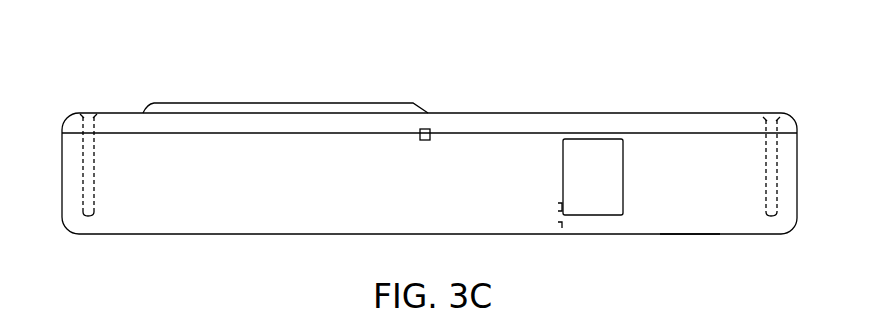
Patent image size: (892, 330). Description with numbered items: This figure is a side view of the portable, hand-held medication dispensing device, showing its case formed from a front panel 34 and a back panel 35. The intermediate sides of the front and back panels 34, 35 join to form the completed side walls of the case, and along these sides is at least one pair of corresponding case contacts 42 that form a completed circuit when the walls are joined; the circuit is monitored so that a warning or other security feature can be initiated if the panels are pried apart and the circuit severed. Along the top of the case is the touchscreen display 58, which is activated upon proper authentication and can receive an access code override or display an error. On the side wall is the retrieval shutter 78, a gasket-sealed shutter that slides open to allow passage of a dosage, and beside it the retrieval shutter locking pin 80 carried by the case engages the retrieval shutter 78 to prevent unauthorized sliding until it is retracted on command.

The front panel 34 is at (677, 113).
The back panel 35 is at (678, 236).
The case contacts 42 is at (427, 143).
The touchscreen display 58 is at (263, 103).
The retrieval shutter 78 is at (607, 215).
The retrieval shutter locking pin 80 is at (560, 217).